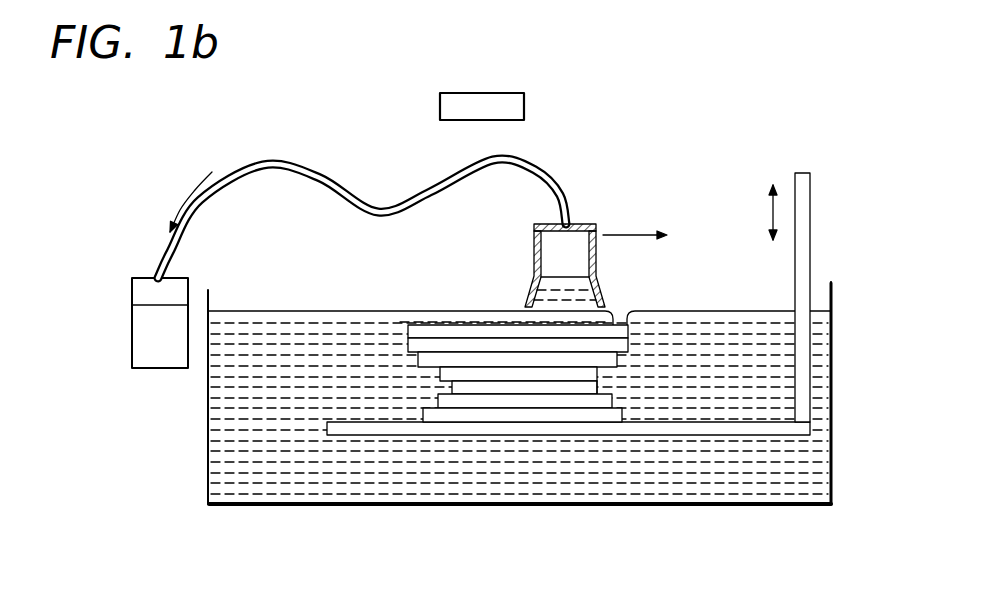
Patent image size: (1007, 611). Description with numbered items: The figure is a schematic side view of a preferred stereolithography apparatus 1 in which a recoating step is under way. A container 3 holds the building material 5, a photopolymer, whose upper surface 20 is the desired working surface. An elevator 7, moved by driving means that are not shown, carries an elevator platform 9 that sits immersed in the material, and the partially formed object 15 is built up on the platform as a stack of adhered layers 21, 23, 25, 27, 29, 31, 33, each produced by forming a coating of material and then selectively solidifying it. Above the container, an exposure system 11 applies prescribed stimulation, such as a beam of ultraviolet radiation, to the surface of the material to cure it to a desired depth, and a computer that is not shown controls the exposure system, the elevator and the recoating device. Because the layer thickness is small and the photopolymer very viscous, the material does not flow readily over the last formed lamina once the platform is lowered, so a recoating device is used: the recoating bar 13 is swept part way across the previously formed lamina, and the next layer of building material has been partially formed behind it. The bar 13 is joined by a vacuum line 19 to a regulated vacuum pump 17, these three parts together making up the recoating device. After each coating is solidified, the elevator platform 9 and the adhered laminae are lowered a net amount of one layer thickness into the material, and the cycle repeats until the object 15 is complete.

The stereolithography apparatus 1 is at (627, 110).
The container 3 is at (831, 297).
The building material 5 is at (727, 333).
The elevator 7 is at (810, 200).
The elevator platform 9 is at (720, 428).
The exposure system 11 is at (440, 107).
The recoating bar 13 is at (597, 222).
The object 15 is at (597, 378).
The regulated vacuum pump 17 is at (140, 277).
The vacuum line 19 is at (257, 162).
The upper surface 20 is at (245, 310).
The layer 21 is at (423, 417).
The layer 23 is at (438, 400).
The layer 25 is at (452, 388).
The layer 27 is at (600, 377).
The layer 29 is at (598, 369).
The layer 31 is at (407, 346).
The layer 33 is at (407, 331).